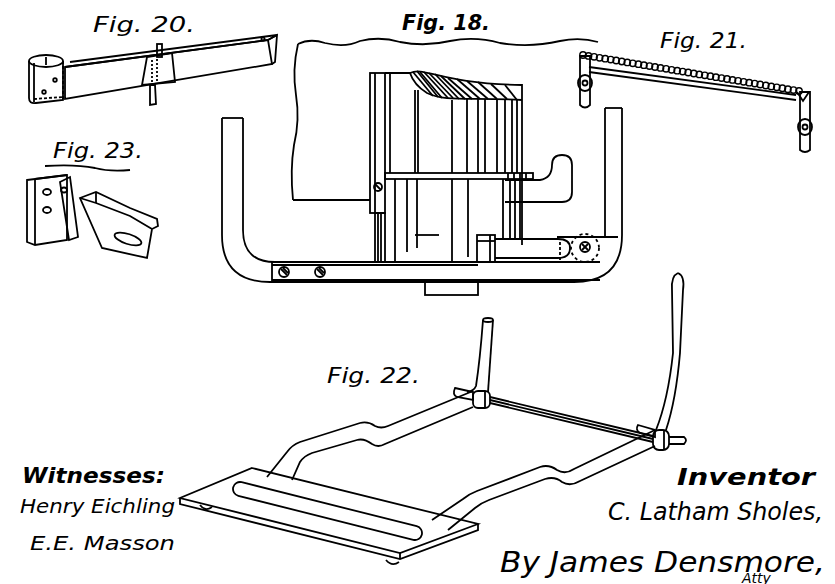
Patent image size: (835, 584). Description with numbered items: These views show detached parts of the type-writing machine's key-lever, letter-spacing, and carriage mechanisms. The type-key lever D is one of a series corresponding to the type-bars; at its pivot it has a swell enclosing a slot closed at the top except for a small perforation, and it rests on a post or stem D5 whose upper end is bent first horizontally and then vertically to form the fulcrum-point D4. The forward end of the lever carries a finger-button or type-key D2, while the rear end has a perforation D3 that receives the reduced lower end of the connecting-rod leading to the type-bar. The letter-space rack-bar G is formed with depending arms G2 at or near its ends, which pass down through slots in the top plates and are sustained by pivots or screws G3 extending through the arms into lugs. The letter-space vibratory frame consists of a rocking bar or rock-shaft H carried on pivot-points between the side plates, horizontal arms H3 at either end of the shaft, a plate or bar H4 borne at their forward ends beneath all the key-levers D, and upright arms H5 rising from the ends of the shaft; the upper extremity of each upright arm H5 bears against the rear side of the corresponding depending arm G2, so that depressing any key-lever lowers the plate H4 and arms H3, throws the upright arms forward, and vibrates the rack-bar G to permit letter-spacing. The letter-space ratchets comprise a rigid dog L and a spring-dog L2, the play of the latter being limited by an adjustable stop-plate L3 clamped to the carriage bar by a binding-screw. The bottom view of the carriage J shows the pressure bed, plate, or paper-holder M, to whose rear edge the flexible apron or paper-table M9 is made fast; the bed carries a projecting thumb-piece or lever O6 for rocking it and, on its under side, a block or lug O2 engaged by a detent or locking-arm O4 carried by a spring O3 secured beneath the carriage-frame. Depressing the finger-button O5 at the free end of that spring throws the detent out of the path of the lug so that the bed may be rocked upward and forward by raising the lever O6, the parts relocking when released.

In FIG. 20, the type-key lever D is at (171, 67).
In FIG. 20, the finger-button or type-key D2 is at (48, 57).
In FIG. 20, the perforation D3 is at (266, 38).
In FIG. 20, the fulcrum-point D4 is at (173, 60).
In FIG. 20, the post or stem D5 is at (156, 98).
In FIG. 23, the rigid dog L is at (47, 219).
In FIG. 23, the spring-dog L2 is at (68, 219).
In FIG. 23, the adjustable stop-plate L3 is at (147, 250).
In FIG. 18, the carriage J is at (422, 195).
In FIG. 18, the spring O3 is at (436, 278).
In FIG. 18, the flexible apron or paper-table M9 is at (445, 119).
In FIG. 18, the drum N is at (451, 166).
In FIG. 18, the pressure bed, plate, or paper-holder M is at (457, 220).
In FIG. 18, the thumb-piece or lever O6 is at (538, 178).
In FIG. 18, the block or lug O2 is at (482, 248).
In FIG. 18, the detent or locking-arm O4 is at (532, 248).
In FIG. 18, the finger-button O5 is at (605, 232).
In FIG. 21, the letter-space rack-bar G is at (691, 79).
In FIG. 21, the depending arms G2 is at (590, 99).
In FIG. 21, the pivots or screws G3 is at (797, 127).
In FIG. 22, the plate or bar H4 is at (329, 516).
In FIG. 22, the horizontal arms H3 is at (461, 459).
In FIG. 22, the rocking bar or rock-shaft H is at (579, 420).
In FIG. 22, the upright arm H5 is at (488, 347).